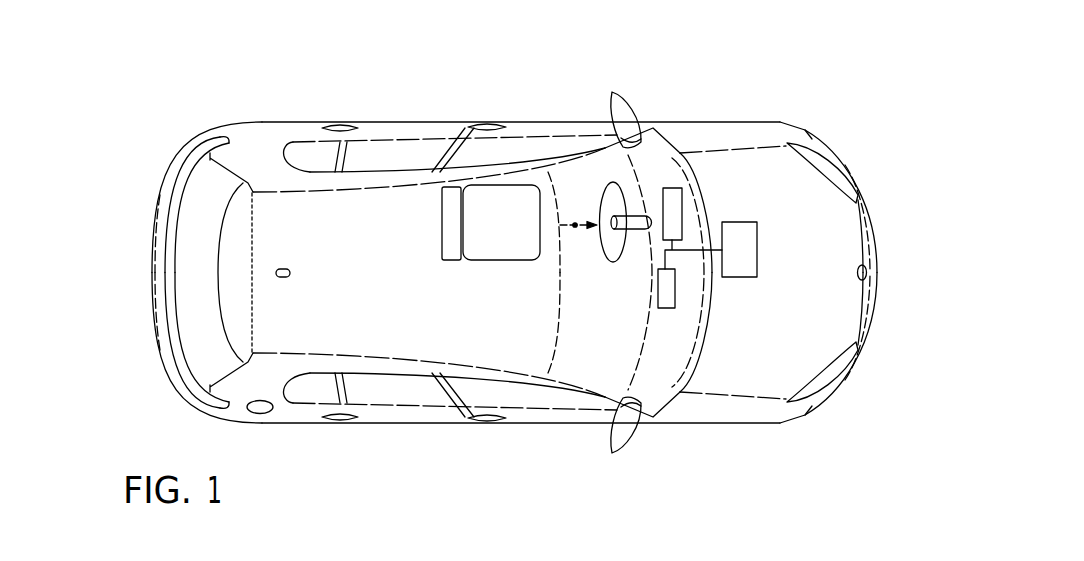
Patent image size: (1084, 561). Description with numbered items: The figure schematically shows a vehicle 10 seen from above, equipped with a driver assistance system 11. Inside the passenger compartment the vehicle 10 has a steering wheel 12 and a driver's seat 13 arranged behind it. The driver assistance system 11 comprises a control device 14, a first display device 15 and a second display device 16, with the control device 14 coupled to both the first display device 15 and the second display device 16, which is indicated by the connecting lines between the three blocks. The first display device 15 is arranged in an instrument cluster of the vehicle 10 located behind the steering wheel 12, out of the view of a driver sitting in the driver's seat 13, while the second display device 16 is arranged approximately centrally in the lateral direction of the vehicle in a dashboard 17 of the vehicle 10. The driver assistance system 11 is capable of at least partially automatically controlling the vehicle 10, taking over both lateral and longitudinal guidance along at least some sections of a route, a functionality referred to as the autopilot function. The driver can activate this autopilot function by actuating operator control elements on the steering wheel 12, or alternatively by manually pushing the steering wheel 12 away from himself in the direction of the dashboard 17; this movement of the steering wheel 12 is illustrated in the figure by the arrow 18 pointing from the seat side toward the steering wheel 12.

The vehicle 10 is at (786, 88).
The driver assistance system 11 is at (746, 306).
The steering wheel 12 is at (603, 253).
The driver's seat 13 is at (498, 261).
The control device 14 is at (757, 253).
The first display device 15 is at (680, 205).
The second display device 16 is at (660, 293).
The dashboard 17 is at (660, 355).
The arrow 18 is at (575, 222).